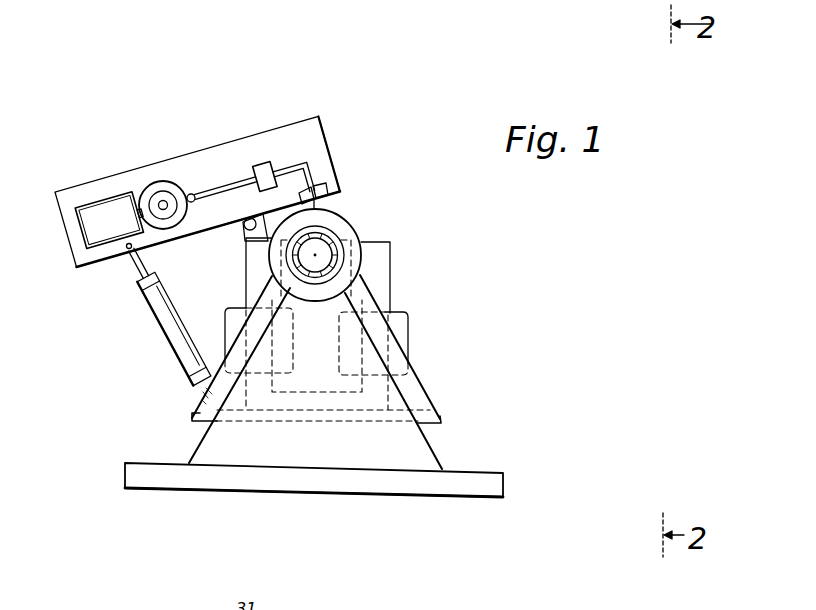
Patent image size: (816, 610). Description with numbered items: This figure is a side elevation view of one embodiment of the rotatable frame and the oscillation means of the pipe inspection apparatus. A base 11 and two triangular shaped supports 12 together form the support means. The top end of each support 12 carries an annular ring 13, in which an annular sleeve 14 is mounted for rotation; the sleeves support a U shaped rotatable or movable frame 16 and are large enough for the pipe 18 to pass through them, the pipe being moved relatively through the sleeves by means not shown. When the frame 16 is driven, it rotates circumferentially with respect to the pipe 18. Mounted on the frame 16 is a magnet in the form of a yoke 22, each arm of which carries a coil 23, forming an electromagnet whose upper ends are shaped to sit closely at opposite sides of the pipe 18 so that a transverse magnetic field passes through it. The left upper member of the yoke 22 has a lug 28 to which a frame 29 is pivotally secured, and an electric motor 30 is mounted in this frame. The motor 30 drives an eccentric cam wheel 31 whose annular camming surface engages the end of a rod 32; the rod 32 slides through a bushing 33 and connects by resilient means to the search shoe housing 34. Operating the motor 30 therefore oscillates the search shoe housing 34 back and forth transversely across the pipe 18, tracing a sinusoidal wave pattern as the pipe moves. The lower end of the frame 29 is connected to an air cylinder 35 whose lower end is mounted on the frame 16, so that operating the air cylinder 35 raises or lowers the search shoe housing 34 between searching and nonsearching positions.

The base 11 is at (503, 484).
The triangular shaped supports 12 is at (436, 451).
The annular rings 13 is at (355, 229).
The annular sleeve 14 is at (343, 253).
The U shaped rotatable frame 16 is at (441, 417).
The pipe 18 is at (330, 237).
The yoke 22 is at (390, 277).
The coil 23 is at (410, 328).
The lug 28 is at (241, 236).
The frame 29 is at (77, 187).
The electric motor 30 is at (66, 236).
The eccentric cam wheel 31 is at (165, 181).
The rod 32 is at (224, 186).
The bushing 33 is at (261, 162).
The search shoe housing 34 is at (330, 188).
The air cylinder 35 is at (165, 333).